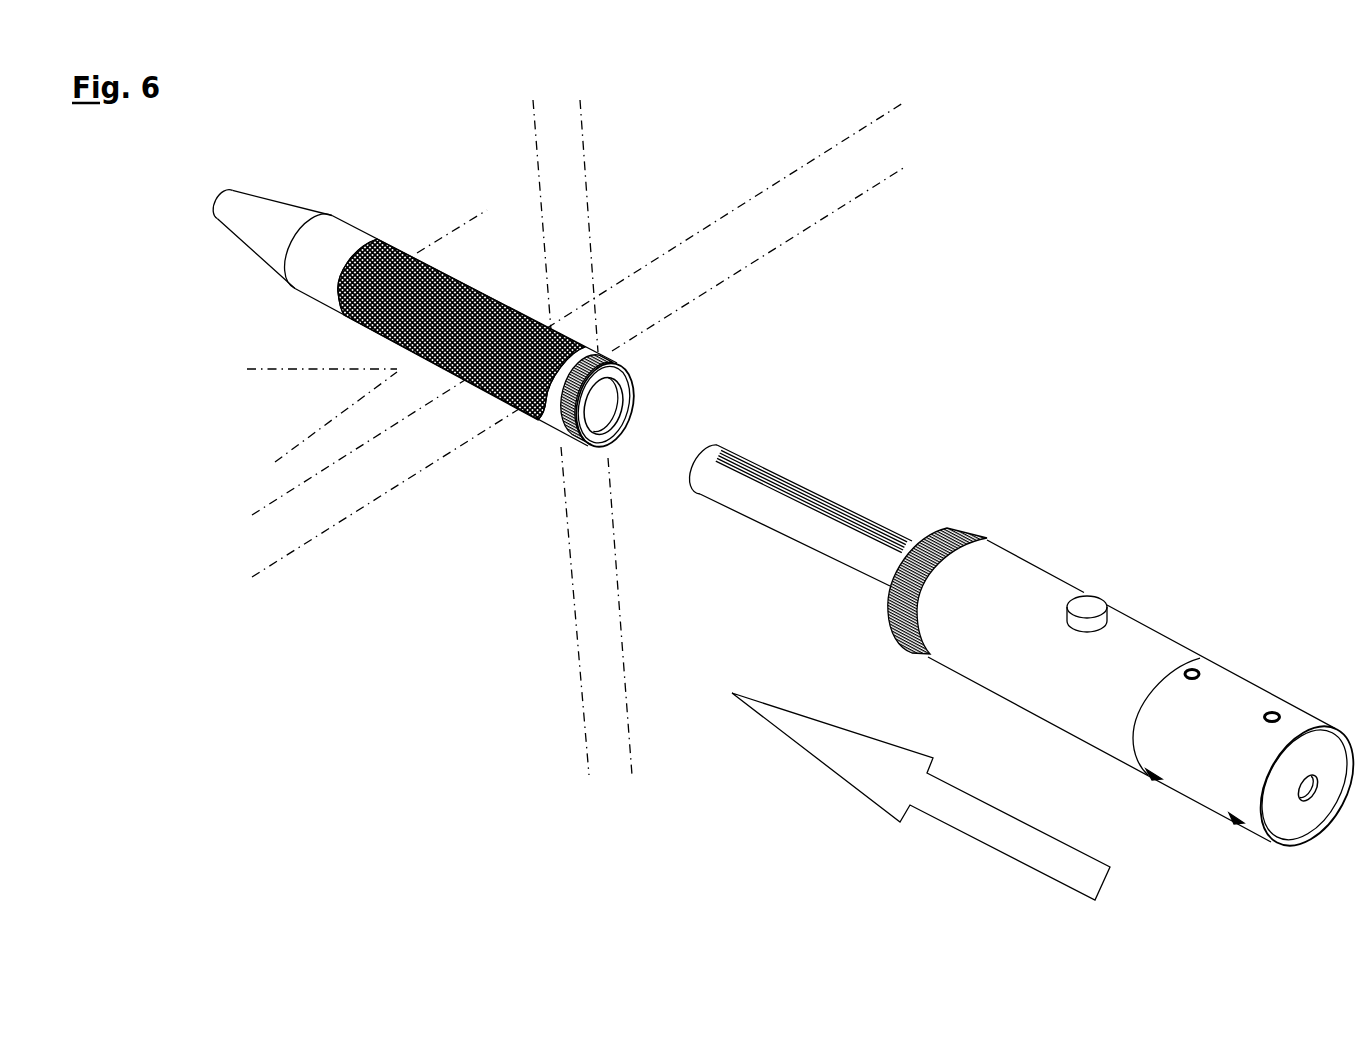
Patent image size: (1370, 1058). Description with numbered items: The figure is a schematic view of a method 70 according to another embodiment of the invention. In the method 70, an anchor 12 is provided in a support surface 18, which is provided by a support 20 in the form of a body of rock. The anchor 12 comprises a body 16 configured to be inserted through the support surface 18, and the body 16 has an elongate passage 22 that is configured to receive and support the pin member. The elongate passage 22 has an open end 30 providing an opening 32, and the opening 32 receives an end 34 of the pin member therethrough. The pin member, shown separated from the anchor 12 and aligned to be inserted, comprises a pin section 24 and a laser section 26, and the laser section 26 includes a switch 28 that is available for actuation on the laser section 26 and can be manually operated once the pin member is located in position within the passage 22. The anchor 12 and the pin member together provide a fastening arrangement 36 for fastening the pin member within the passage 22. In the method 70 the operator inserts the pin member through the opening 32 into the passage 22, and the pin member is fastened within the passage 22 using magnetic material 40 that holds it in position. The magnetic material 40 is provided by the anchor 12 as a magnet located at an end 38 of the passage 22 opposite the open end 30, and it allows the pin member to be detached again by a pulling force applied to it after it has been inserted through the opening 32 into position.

The anchor 12 is at (333, 219).
The body 16 is at (368, 350).
The support surface 18 is at (866, 193).
The support 20 is at (241, 370).
The elongate passage 22 is at (641, 421).
The pin section 24 is at (797, 545).
The laser section 26 is at (1058, 700).
The switch 28 is at (1105, 604).
The open end 30 is at (627, 449).
The opening 32 is at (636, 432).
The end of the pin member 34 is at (720, 445).
The fastening arrangement 36 is at (539, 527).
The end of the passage 38 is at (290, 310).
The magnetic material 40 is at (358, 248).
The method 70 is at (1043, 311).